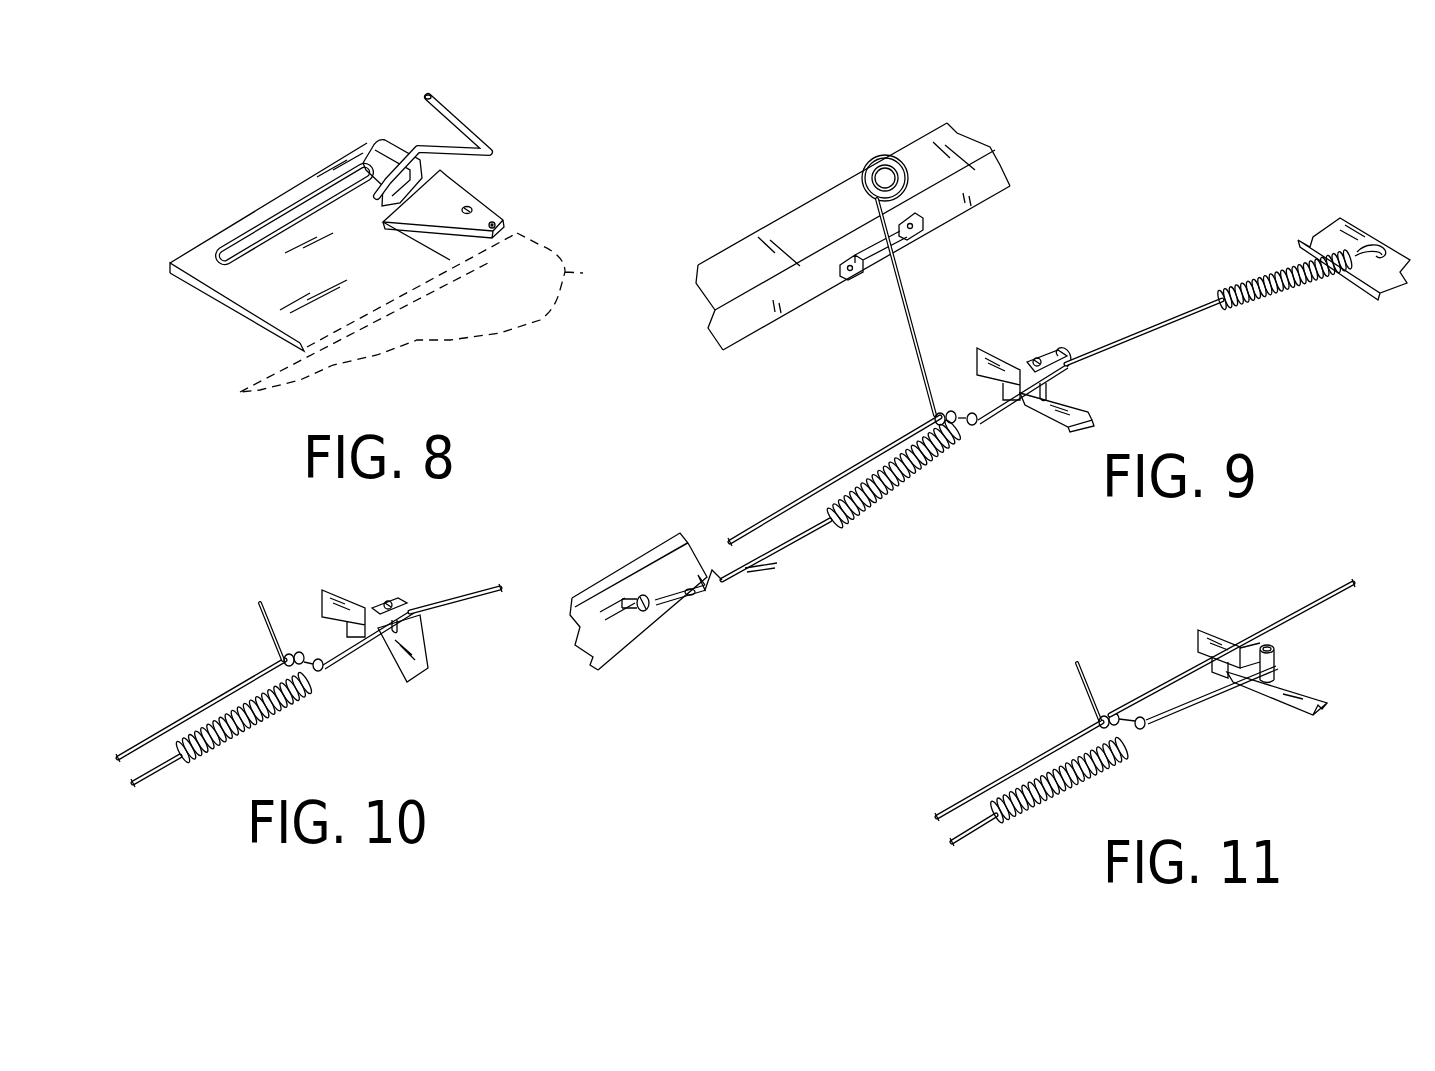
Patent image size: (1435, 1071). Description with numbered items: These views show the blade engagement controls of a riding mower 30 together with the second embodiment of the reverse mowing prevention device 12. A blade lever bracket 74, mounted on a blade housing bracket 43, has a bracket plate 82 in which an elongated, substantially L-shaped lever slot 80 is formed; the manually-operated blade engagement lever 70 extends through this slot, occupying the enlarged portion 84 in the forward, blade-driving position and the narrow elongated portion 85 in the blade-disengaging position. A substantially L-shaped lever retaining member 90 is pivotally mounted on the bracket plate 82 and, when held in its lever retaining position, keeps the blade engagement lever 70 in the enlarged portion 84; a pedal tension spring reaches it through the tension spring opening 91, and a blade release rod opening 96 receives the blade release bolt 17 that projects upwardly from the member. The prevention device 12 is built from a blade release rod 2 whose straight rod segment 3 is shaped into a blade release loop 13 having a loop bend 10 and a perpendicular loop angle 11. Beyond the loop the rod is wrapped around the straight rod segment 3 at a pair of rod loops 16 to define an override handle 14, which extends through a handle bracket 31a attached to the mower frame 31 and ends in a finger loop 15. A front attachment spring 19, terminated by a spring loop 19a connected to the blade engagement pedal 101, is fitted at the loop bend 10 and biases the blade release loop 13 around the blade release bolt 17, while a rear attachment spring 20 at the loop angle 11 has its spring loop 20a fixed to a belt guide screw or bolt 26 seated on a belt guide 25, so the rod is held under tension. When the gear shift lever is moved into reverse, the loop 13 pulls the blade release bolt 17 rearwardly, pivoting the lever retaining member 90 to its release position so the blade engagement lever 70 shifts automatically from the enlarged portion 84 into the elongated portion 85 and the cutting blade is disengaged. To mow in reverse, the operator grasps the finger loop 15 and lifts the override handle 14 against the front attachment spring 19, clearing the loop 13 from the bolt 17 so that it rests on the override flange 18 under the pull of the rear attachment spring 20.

In FIG. 9, the blade release rod 2 is at (798, 484).
In FIG. 10, the blade release rod 2 is at (146, 718).
In FIG. 11, the blade release rod 2 is at (964, 779).
In FIG. 9, the straight rod segment 3 is at (858, 466).
In FIG. 10, the straight rod segment 3 is at (252, 682).
In FIG. 11, the straight rod segment 3 is at (1067, 740).
In FIG. 9, the loop bend 10 is at (1042, 356).
In FIG. 9, the loop angle 11 is at (985, 417).
In FIG. 10, the loop angle 11 is at (330, 675).
In FIG. 11, the loop angle 11 is at (1143, 730).
In FIG. 9, the reverse mowing prevention device 12 is at (894, 437).
In FIG. 10, the reverse mowing prevention device 12 is at (265, 650).
In FIG. 11, the reverse mowing prevention device 12 is at (1106, 710).
In FIG. 9, the blade release loop 13 is at (1014, 424).
In FIG. 10, the blade release loop 13 is at (371, 668).
In FIG. 11, the blade release loop 13 is at (1187, 731).
In FIG. 9, the override handle 14 is at (910, 305).
In FIG. 10, the override handle 14 is at (263, 617).
In FIG. 11, the override handle 14 is at (1080, 680).
In FIG. 9, the finger loop 15 is at (880, 153).
In FIG. 9, the rod loops 16 is at (945, 405).
In FIG. 10, the rod loops 16 is at (293, 655).
In FIG. 11, the rod loops 16 is at (1102, 715).
In FIG. 9, the blade release bolt 17 is at (1038, 412).
In FIG. 10, the blade release bolt 17 is at (392, 637).
In FIG. 11, the blade release bolt 17 is at (1275, 668).
In FIG. 9, the override flange 18 is at (1000, 355).
In FIG. 10, the override flange 18 is at (340, 593).
In FIG. 11, the override flange 18 is at (1210, 628).
In FIG. 9, the front attachment spring 19 is at (1273, 272).
In FIG. 10, the front attachment spring 19 is at (460, 603).
In FIG. 11, the front attachment spring 19 is at (1300, 607).
In FIG. 9, the spring loop 19a is at (1372, 235).
In FIG. 9, the rear attachment spring 20 is at (900, 488).
In FIG. 10, the rear attachment spring 20 is at (263, 717).
In FIG. 11, the rear attachment spring 20 is at (1080, 780).
In FIG. 9, the spring loop 20a is at (677, 608).
In FIG. 9, the belt guide 25 is at (612, 603).
In FIG. 9, the belt guide screw or bolt 26 is at (637, 612).
In FIG. 9, the riding mower 30 is at (849, 236).
In FIG. 9, the mower frame 31 is at (828, 195).
In FIG. 9, the handle bracket 31a is at (878, 275).
In FIG. 8, the blade housing bracket 43 is at (583, 273).
In FIG. 8, the blade engagement lever 70 is at (463, 127).
In FIG. 8, the blade lever bracket 74 is at (262, 346).
In FIG. 8, the lever slot 80 is at (259, 222).
In FIG. 8, the bracket plate 82 is at (205, 262).
In FIG. 8, the enlarged portion 84 is at (370, 148).
In FIG. 8, the elongated portion 85 is at (242, 253).
In FIG. 8, the lever retaining member 90 is at (499, 203).
In FIG. 9, the lever retaining member 90 is at (1099, 393).
In FIG. 10, the lever retaining member 90 is at (449, 672).
In FIG. 11, the lever retaining member 90 is at (1345, 705).
In FIG. 8, the tension spring opening 91 is at (500, 225).
In FIG. 8, the blade release rod opening 96 is at (470, 207).
In FIG. 9, the blade engagement pedal 101 is at (1367, 265).